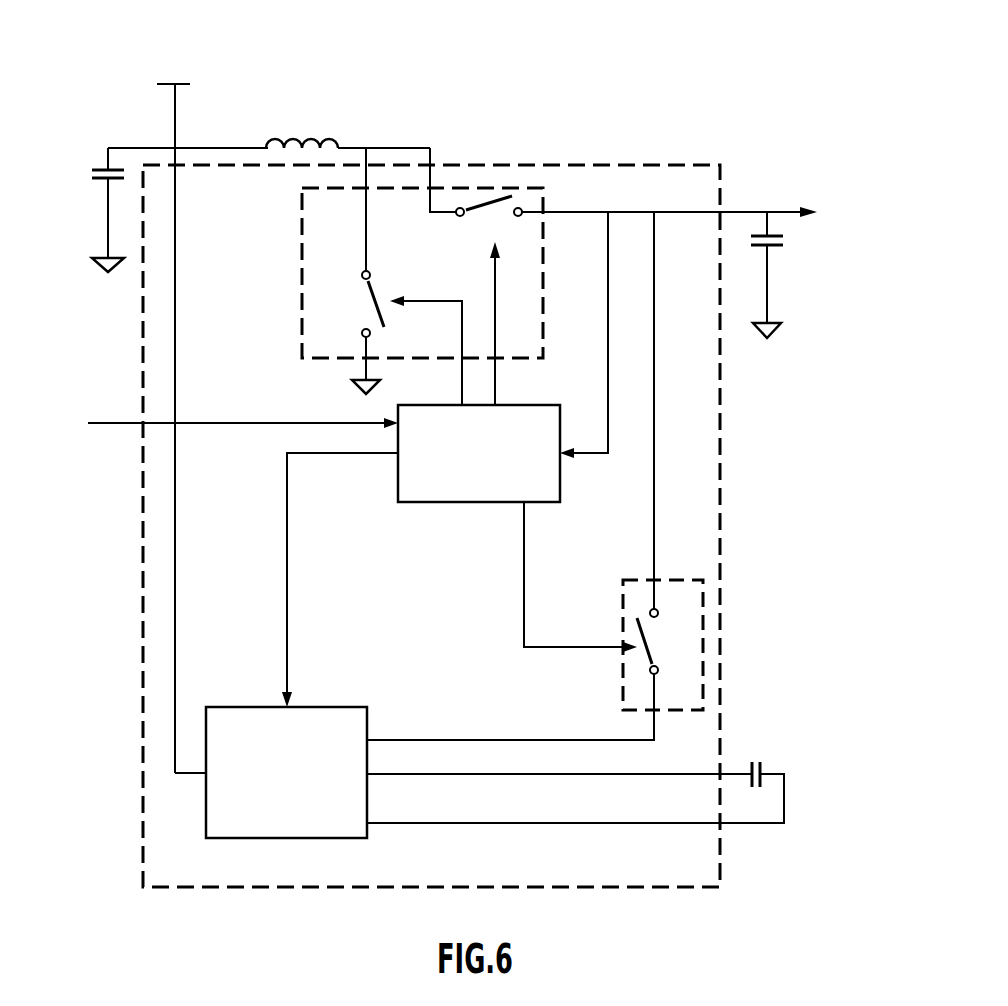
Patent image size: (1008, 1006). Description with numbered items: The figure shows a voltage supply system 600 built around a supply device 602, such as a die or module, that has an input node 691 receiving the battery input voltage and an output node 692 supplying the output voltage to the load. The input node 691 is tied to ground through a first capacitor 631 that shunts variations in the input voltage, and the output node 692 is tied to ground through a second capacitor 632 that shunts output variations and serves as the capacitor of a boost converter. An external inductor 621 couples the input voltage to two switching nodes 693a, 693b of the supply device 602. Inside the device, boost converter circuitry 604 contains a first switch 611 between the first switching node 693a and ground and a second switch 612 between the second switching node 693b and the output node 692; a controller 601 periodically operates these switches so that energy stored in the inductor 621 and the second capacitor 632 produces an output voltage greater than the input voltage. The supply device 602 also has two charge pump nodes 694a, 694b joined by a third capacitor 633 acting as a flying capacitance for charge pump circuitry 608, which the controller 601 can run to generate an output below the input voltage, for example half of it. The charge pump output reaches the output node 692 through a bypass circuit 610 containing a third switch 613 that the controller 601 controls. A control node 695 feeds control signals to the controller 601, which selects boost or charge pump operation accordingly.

The voltage supply system 600 is at (512, 62).
The input node 691 is at (175, 147).
The inductor 621 is at (292, 142).
The first switching node 693a is at (368, 151).
The second switching node 693b is at (432, 152).
The input capacitor 631 is at (105, 180).
The supply device 602 is at (554, 165).
The boost converter circuitry 604 is at (302, 278).
The second switch 612 is at (470, 232).
The first switch 611 is at (360, 313).
The control node 695 is at (105, 423).
The controller 601 is at (476, 503).
The bypass circuit 610 is at (623, 672).
The third switch 613 is at (680, 632).
The charge pump circuitry 608 is at (337, 707).
The output node 692 is at (742, 212).
The second capacitor 632 is at (776, 246).
The charge pump node 694a is at (733, 774).
The third capacitor 633 is at (760, 766).
The charge pump node 694b is at (733, 823).